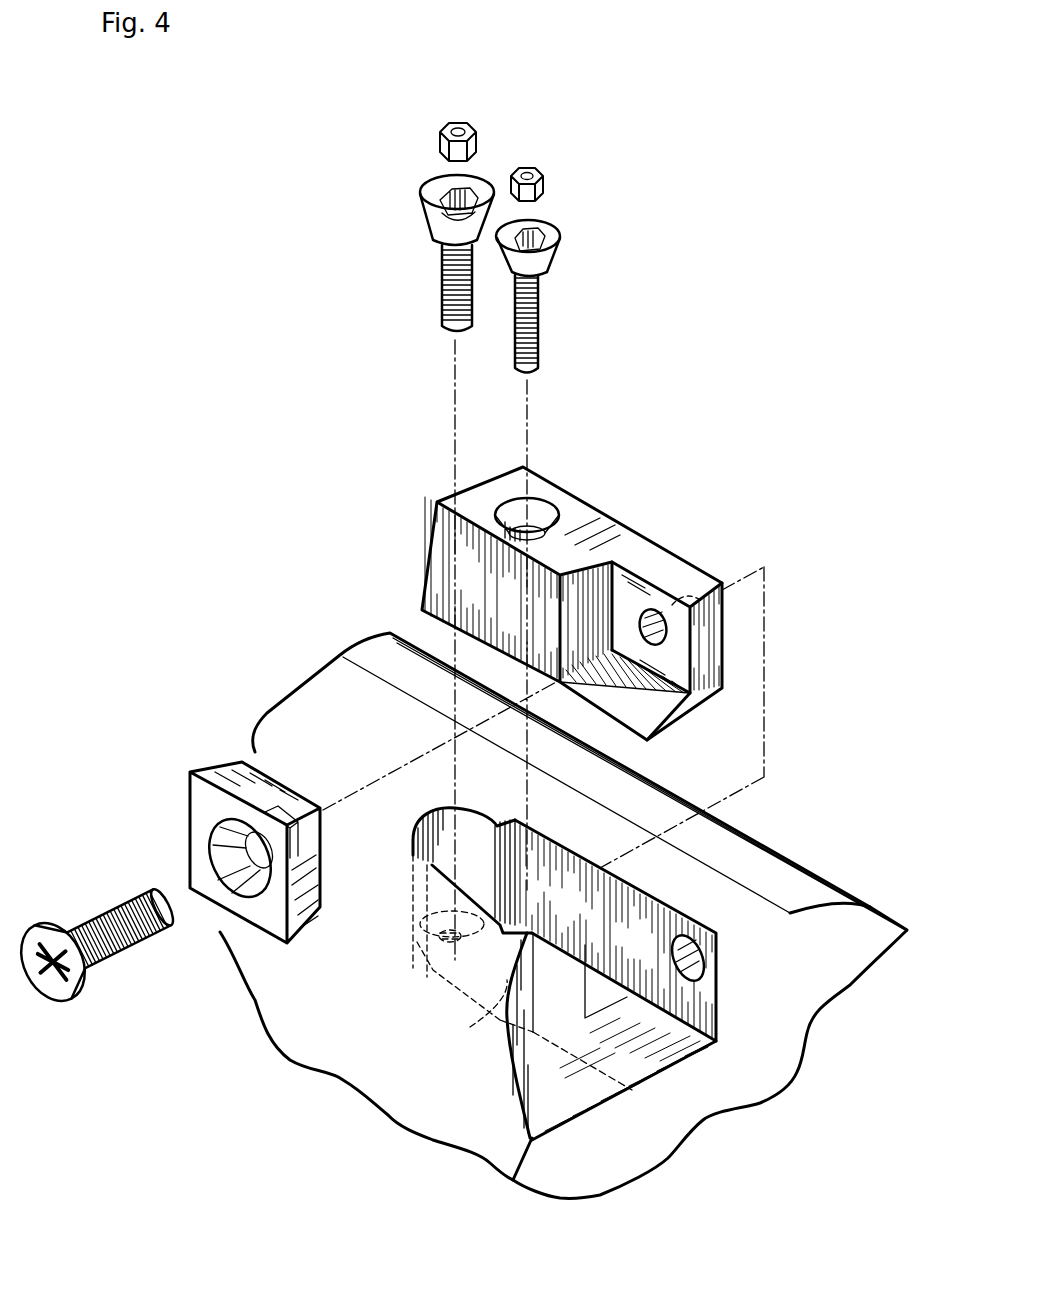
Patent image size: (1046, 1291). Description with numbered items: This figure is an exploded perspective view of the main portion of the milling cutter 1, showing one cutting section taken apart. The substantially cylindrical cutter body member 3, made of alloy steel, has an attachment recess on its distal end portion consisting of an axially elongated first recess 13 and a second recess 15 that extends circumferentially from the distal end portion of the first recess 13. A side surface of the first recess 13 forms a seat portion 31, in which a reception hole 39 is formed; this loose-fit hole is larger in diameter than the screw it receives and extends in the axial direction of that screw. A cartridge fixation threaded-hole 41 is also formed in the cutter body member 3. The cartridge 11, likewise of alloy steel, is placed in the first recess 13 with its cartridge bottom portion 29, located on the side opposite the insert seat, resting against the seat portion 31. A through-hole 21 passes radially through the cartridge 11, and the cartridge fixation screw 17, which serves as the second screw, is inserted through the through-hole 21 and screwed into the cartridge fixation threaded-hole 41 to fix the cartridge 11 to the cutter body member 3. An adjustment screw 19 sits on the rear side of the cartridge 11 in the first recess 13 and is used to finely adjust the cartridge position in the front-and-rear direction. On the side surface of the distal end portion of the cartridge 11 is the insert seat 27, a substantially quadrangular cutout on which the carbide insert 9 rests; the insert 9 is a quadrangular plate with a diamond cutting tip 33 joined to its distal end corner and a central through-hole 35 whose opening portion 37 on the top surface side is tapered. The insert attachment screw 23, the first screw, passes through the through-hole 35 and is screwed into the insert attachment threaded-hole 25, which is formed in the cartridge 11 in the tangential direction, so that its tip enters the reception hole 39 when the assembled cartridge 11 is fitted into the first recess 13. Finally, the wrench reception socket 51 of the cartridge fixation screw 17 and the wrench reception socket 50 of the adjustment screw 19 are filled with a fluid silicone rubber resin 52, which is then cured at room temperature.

The milling cutter 1 is at (832, 247).
The cutter body member 3 is at (370, 1063).
The insert 9 is at (200, 810).
The cartridge 11 is at (640, 550).
The first recess 13 is at (563, 870).
The second recess 15 is at (540, 1107).
The cartridge fixation screw 17 is at (540, 318).
The adjustment screw 19 is at (443, 288).
The through-hole 21 is at (543, 510).
The insert attachment screw 23 is at (100, 910).
The insert attachment threaded-hole 25 is at (667, 635).
The insert seat 27 is at (692, 700).
The cartridge bottom portion 29 is at (685, 560).
The seat portion 31 is at (647, 917).
The cutting tip 33 is at (293, 838).
The through-hole 35 is at (263, 907).
The opening portion 37 is at (213, 893).
The reception hole 39 is at (702, 962).
The cartridge fixation threaded-hole 41 is at (475, 1018).
The wrench reception socket 50 is at (435, 178).
The wrench reception socket 51 is at (543, 222).
The resin 52 is at (470, 118).